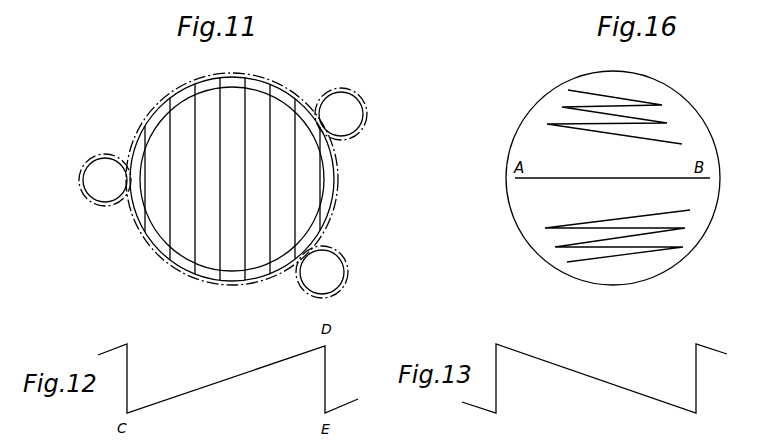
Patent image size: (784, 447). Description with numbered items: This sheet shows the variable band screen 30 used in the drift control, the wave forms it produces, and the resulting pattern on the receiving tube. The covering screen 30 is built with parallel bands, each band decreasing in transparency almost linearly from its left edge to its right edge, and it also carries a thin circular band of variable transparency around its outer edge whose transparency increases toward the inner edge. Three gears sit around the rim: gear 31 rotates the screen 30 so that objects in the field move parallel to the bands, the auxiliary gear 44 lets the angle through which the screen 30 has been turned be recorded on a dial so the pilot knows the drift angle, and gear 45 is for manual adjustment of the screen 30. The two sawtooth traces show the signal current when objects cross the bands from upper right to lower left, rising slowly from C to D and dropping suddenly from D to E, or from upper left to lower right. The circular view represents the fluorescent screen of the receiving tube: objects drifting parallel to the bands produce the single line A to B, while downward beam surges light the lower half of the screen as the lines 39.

In FIG. 11, the variable band screen 30 is at (250, 77).
In FIG. 11, the gear 31 is at (362, 133).
In FIG. 11, the auxiliary gear 44 is at (343, 254).
In FIG. 11, the gear 45 is at (93, 204).
In FIG. 16, the lines 39 is at (663, 250).